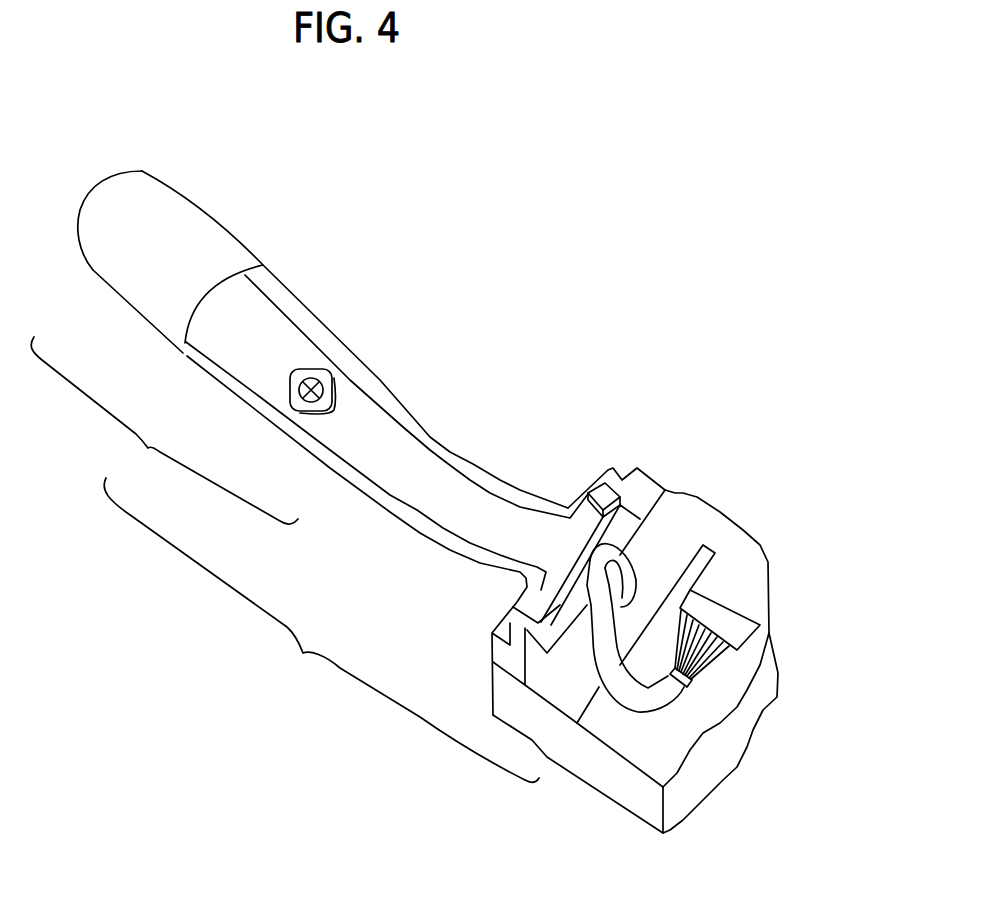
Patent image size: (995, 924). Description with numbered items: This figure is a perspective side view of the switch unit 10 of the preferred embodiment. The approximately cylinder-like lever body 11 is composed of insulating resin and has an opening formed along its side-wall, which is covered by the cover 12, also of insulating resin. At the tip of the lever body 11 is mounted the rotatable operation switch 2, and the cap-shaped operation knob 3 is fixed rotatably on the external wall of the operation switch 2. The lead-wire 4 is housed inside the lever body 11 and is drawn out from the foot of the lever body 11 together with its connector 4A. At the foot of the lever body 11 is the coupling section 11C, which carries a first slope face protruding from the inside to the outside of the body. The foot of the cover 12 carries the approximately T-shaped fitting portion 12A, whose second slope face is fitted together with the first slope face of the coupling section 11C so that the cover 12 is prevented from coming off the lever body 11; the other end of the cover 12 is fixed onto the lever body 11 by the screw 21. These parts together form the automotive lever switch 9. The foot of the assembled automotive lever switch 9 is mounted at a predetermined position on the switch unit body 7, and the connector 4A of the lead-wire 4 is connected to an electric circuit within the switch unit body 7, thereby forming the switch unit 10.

The rotatable operation switch 2 is at (170, 290).
The operation knob 3 is at (135, 272).
The lead-wire 4 is at (673, 612).
The connector 4A is at (717, 610).
The switch unit body 7 is at (610, 727).
The automotive lever switch 9 is at (154, 487).
The switch unit 10 is at (315, 687).
The lever body 11 is at (313, 445).
The coupling section 11C is at (593, 500).
The cover 12 is at (255, 362).
The fitting portion 12A is at (560, 550).
The screw 21 is at (318, 380).